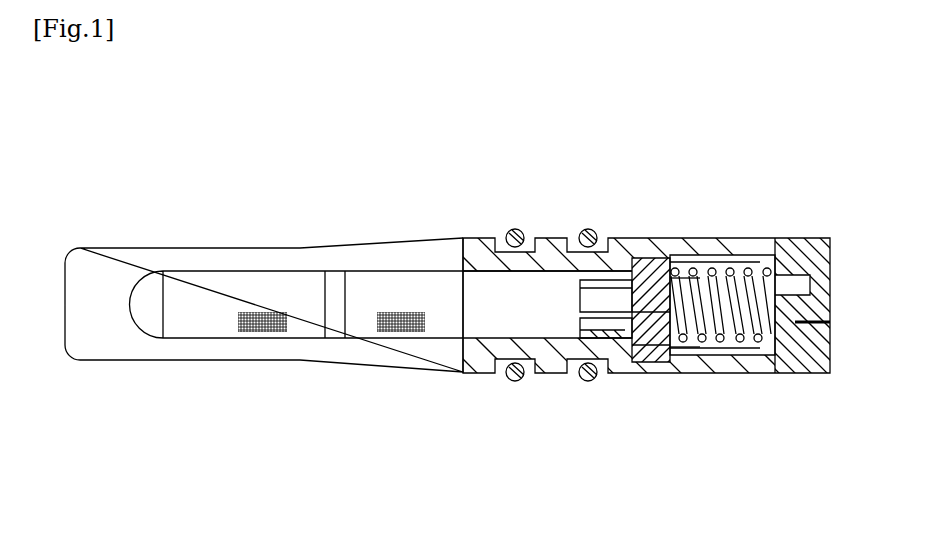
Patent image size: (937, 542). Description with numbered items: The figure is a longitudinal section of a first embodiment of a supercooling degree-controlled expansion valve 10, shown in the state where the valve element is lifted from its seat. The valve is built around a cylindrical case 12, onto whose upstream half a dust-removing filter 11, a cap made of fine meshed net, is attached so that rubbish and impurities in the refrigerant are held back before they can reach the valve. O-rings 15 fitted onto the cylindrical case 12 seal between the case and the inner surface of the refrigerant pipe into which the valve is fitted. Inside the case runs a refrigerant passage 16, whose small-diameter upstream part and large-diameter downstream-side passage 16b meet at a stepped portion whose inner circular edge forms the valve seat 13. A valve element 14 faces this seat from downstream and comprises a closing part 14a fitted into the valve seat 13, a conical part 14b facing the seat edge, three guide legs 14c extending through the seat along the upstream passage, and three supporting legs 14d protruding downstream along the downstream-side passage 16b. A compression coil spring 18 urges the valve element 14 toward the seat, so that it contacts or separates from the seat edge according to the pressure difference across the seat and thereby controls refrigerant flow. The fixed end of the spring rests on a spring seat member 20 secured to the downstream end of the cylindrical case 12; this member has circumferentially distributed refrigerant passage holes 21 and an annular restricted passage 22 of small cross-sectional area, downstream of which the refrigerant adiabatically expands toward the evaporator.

The expansion valve 10 is at (375, 214).
The dust-removing filter 11 is at (215, 330).
The cylindrical case 12 is at (477, 372).
The valve seat 13 is at (620, 276).
The valve element 14 is at (655, 262).
The closing part 14a is at (642, 350).
The conical part 14b is at (645, 340).
The guide legs 14c is at (632, 336).
The supporting legs 14d is at (711, 354).
The O-rings 15 is at (583, 232).
The refrigerant passage 16 is at (475, 238).
The downstream-side passage 16b is at (733, 256).
The compression coil spring 18 is at (740, 348).
The spring seat member 20 is at (807, 360).
The refrigerant passage holes 21 is at (790, 274).
The restricted passage 22 is at (823, 294).